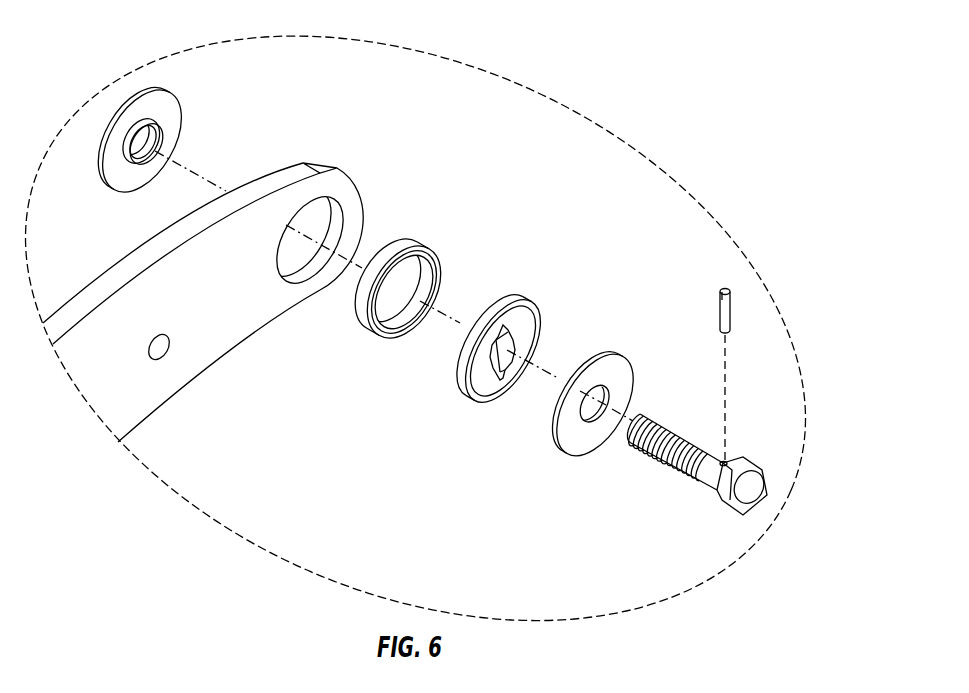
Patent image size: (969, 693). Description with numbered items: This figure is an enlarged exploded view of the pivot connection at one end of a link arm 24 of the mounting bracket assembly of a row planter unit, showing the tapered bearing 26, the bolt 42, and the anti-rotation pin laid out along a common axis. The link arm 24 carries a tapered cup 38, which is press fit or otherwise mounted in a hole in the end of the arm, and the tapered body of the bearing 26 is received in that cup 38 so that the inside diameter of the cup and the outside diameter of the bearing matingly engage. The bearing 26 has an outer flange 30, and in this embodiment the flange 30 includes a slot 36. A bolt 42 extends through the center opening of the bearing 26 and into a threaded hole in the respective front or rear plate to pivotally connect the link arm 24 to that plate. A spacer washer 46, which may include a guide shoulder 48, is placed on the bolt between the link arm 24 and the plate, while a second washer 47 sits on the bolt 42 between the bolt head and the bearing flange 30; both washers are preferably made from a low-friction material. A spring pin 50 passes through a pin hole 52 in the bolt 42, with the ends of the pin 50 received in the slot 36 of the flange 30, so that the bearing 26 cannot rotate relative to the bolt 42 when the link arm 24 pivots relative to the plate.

The linking arm 24 is at (162, 238).
The tapered bearing 26 is at (518, 339).
The outer flange 30 is at (531, 345).
The slot 36 is at (504, 325).
The tapered cup 38 is at (405, 247).
The bolt 42 is at (707, 489).
The spacer washer 46 is at (168, 138).
The second washer 47 is at (622, 373).
The guide shoulder 48 is at (162, 122).
The spring pin 50 is at (720, 304).
The pin hole 52 is at (724, 462).